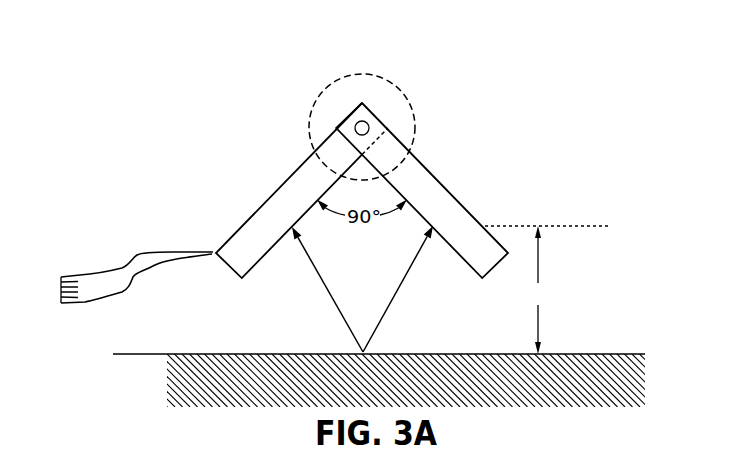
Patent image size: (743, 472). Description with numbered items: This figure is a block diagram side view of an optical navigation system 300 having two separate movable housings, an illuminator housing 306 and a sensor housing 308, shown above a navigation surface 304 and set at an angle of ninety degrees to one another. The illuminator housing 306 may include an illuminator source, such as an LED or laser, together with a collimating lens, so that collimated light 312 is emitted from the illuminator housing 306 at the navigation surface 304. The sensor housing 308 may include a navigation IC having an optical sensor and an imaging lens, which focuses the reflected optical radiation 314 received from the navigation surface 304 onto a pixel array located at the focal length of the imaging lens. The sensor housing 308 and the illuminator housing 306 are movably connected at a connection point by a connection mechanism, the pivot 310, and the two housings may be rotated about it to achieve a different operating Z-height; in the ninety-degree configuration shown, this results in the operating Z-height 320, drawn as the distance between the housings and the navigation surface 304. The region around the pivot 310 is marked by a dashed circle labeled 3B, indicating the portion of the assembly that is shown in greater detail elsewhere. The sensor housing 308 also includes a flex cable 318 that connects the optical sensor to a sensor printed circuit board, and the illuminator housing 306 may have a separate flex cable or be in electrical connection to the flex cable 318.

The optical navigation system 300 is at (212, 91).
The navigation surface 304 is at (594, 345).
The illuminator housing 306 is at (447, 186).
The sensor housing 308 is at (280, 184).
The pivot 310 is at (366, 124).
The collimated light 312 is at (400, 313).
The reflected optical radiation 314 is at (330, 316).
The flex cable 318 is at (105, 272).
The operating Z-height 320 is at (557, 292).
The detail view 3B is at (416, 124).